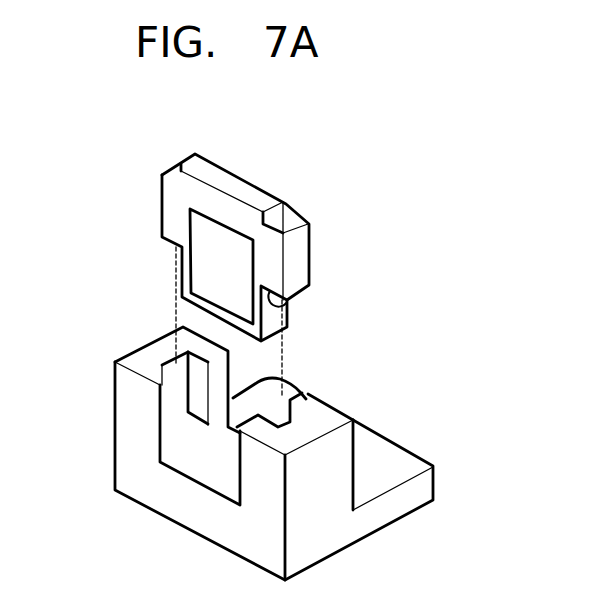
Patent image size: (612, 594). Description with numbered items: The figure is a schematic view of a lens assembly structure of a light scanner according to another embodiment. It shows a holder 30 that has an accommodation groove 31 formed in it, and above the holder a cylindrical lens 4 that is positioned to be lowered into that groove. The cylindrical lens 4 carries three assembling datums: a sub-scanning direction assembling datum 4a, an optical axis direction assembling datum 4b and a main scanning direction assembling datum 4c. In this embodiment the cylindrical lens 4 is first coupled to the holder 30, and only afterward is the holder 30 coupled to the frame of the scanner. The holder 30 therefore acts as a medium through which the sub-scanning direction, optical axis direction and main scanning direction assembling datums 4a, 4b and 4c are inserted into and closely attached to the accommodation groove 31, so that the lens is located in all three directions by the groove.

The cylindrical lens 4 is at (150, 178).
The sub-scanning direction assembling datum 4a is at (288, 306).
The optical axis direction assembling datum 4b is at (270, 252).
The main scanning direction assembling datum 4c is at (310, 262).
The holder 30 is at (336, 411).
The accommodation groove 31 is at (292, 405).